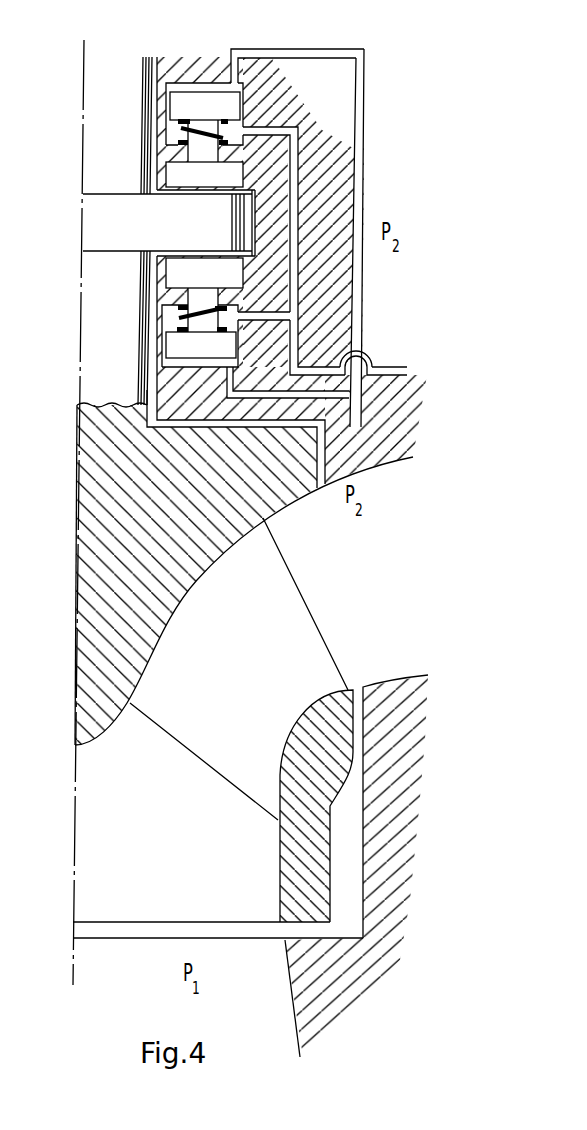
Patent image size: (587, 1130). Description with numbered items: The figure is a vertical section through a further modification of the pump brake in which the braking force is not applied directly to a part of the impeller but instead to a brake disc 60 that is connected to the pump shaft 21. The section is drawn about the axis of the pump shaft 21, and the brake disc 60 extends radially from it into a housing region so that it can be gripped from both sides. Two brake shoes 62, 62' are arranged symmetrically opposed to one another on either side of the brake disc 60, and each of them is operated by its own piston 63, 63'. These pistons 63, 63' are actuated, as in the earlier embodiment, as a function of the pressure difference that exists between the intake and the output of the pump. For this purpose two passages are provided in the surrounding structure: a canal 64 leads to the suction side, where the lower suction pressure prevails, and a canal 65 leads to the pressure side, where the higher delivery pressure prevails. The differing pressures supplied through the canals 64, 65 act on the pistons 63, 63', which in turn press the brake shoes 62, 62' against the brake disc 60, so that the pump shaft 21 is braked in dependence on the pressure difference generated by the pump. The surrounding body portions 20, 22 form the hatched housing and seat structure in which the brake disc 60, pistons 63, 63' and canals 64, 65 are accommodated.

The housing body 20 is at (117, 503).
The pump shaft 21 is at (100, 137).
The seat body 22 is at (400, 847).
The brake disc 60 is at (127, 232).
The brake shoe 62 is at (257, 276).
The brake shoe 62' is at (260, 161).
The piston 63 is at (171, 331).
The piston 63' is at (242, 107).
The canal 64 is at (355, 413).
The canal 65 is at (388, 367).